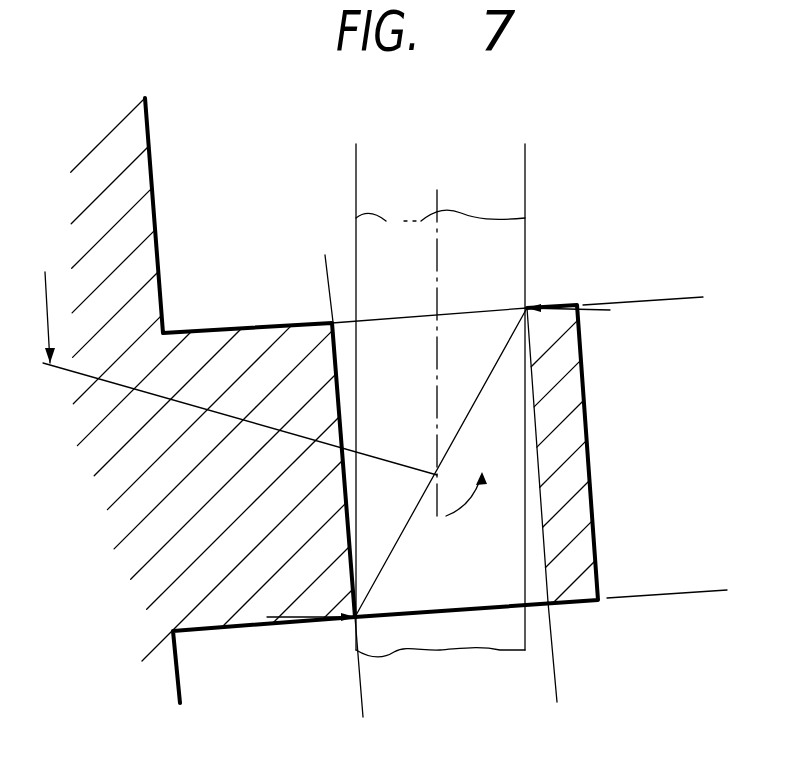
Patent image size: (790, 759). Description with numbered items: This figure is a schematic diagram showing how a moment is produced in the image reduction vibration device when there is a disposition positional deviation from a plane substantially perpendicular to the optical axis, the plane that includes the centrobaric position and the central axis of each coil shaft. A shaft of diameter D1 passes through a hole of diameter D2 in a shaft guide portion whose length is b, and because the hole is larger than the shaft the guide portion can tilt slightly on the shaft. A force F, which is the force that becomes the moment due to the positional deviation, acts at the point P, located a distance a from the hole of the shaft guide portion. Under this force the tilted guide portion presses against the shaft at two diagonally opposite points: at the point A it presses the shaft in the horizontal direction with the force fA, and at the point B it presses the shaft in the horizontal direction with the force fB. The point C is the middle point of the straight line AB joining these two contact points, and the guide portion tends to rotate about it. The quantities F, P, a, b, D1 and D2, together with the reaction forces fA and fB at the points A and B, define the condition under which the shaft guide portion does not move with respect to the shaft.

The force F is at (45, 301).
The point of force application P is at (239, 419).
The distance from point P to hole a is at (48, 277).
The point A is at (537, 440).
The pressing force at point A fA is at (580, 292).
The pressing force at point B fB is at (299, 639).
The point B is at (349, 667).
The middle point of line AB C is at (441, 403).
The shaft diameter D1 is at (356, 152).
The hole diameter D2 is at (362, 710).
The length of shaft guide portion b is at (700, 300).